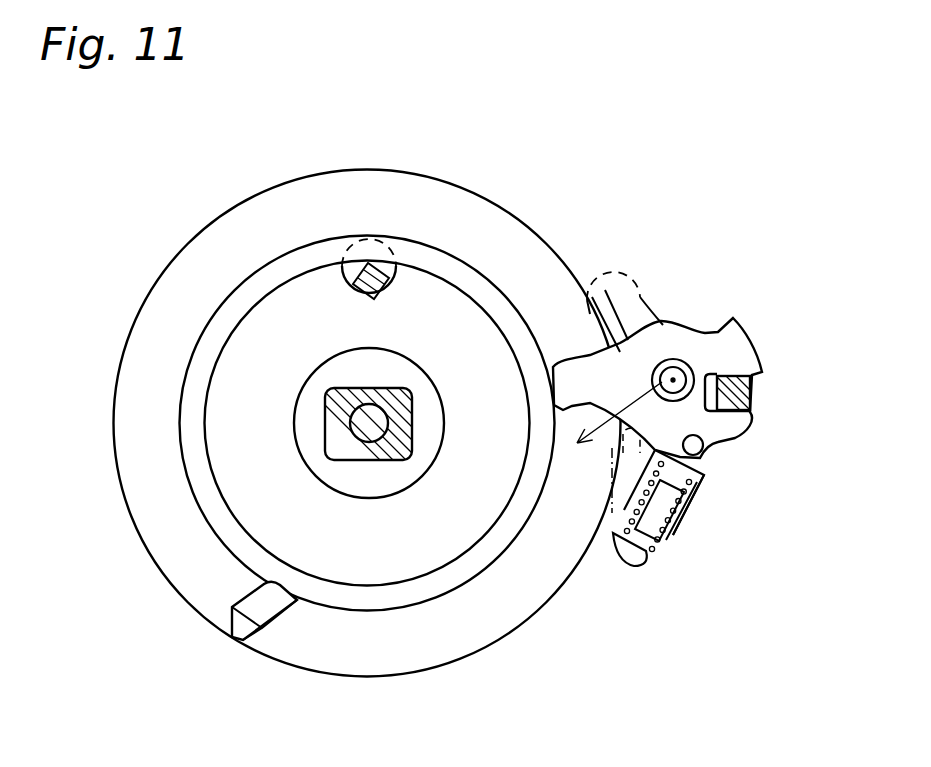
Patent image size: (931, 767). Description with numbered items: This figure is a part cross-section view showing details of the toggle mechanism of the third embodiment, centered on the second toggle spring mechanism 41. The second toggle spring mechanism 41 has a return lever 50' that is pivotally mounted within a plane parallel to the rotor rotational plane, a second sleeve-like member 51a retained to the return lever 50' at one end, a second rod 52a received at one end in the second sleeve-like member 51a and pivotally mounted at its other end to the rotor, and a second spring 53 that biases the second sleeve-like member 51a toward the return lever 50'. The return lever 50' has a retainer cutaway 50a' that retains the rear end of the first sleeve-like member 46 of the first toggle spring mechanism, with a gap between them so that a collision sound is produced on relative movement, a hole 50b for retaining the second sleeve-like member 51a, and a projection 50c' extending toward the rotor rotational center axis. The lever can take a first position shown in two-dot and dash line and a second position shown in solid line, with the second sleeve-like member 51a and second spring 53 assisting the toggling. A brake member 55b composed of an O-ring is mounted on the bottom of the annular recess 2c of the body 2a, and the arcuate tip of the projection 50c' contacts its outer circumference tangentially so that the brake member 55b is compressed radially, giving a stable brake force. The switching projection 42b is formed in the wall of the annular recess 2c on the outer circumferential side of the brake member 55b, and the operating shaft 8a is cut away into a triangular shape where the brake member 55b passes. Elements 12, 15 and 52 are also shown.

The body 2a is at (543, 256).
The annular recess 2c is at (433, 575).
The brake member 55b is at (505, 540).
The hub 12 is at (353, 398).
The shaft 15 is at (373, 410).
The operating shaft 8a is at (364, 266).
The switching projection 42b is at (238, 612).
The return lever 50' is at (668, 356).
The projection 50c' is at (639, 301).
The retainer cutaway 50a' is at (776, 359).
The first sleeve-like member 46 is at (750, 393).
The hole 50b is at (703, 443).
The pawl housing 52 is at (703, 477).
The second sleeve-like member 51a is at (697, 495).
The second spring 53 is at (655, 543).
The second rod 52a is at (630, 562).
The second toggle spring mechanism 41 is at (711, 545).